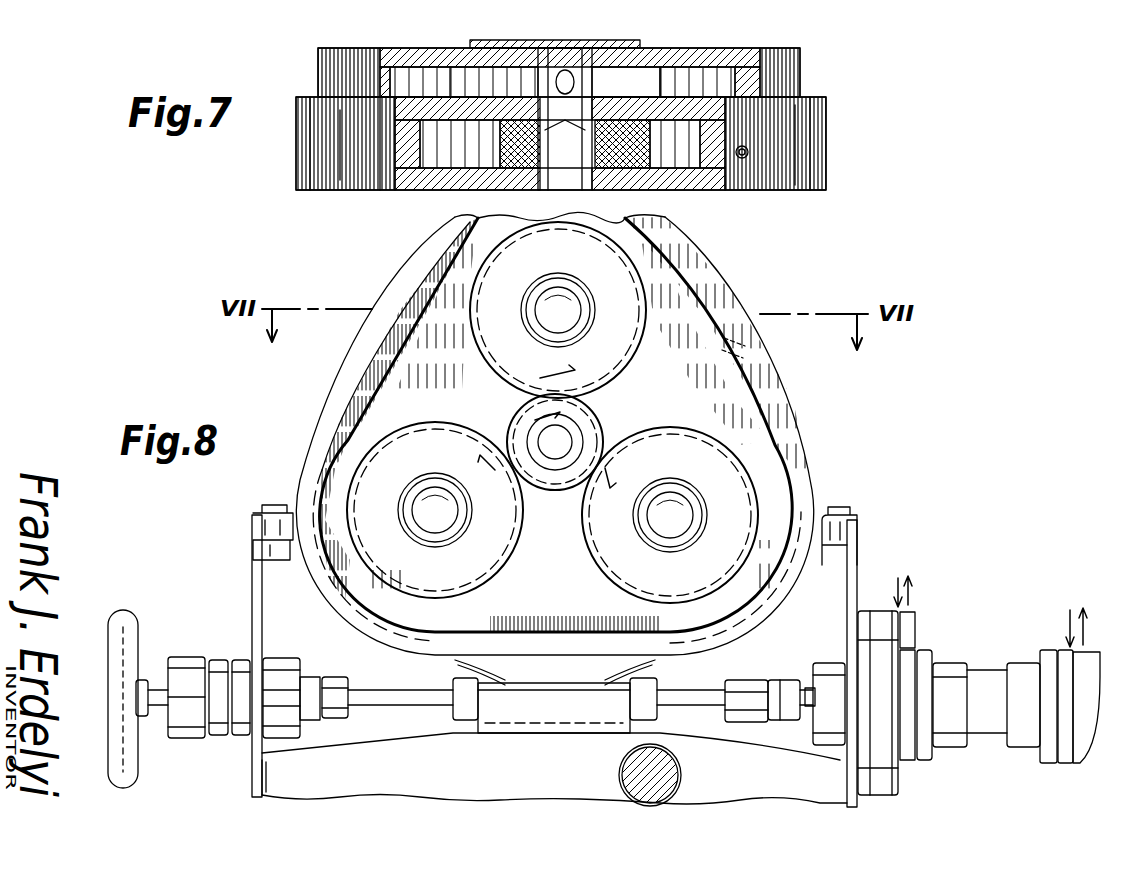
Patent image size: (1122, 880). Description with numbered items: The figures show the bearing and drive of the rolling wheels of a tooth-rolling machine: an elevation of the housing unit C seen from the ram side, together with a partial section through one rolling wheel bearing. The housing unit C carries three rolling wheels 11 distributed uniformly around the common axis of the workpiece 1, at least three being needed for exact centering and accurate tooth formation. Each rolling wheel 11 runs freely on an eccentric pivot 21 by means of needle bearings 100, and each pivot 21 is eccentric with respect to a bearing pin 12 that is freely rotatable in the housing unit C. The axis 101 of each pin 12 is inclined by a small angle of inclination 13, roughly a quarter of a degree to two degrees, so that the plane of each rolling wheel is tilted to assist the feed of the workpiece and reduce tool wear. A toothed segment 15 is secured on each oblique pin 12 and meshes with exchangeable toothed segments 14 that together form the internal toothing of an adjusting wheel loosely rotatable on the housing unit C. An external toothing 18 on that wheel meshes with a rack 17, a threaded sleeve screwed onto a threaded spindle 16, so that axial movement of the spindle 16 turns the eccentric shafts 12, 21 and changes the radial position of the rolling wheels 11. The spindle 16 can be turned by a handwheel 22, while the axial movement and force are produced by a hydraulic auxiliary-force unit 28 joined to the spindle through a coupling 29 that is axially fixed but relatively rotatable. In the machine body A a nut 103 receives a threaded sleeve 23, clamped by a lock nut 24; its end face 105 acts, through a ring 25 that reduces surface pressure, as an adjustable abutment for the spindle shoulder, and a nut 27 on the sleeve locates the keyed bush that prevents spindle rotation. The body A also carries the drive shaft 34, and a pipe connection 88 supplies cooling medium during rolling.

In FIG. 8, the workpiece 1 is at (597, 430).
In FIG. 7, the rolling wheel 11 is at (468, 183).
In FIG. 8, the rolling wheel 11 is at (457, 580).
In FIG. 7, the bearing pin 12 is at (587, 157).
In FIG. 8, the bearing pin 12 is at (440, 523).
In FIG. 7, the angle of inclination 13 is at (561, 140).
In FIG. 7, the toothed segment 14 is at (805, 83).
In FIG. 8, the toothed segment 14 is at (722, 285).
In FIG. 7, the toothed segment 15 is at (592, 93).
In FIG. 8, the threaded spindle 16 is at (702, 720).
In FIG. 8, the rack 17 is at (467, 723).
In FIG. 8, the external toothing 18 is at (455, 665).
In FIG. 7, the eccentric pivot 21 is at (592, 170).
In FIG. 8, the eccentric pivot 21 is at (583, 325).
In FIG. 8, the handwheel 22 is at (125, 612).
In FIG. 8, the threaded sleeve 23 is at (218, 660).
In FIG. 8, the lock nut 24 is at (238, 738).
In FIG. 8, the ring 25 is at (338, 716).
In FIG. 8, the nut 27 is at (182, 660).
In FIG. 8, the hydraulic auxiliary-force unit 28 is at (978, 685).
In FIG. 8, the coupling 29 is at (760, 672).
In FIG. 8, the shaft 34 is at (626, 775).
In FIG. 7, the pipe connection 88 is at (747, 160).
In FIG. 8, the pipe connection 88 is at (738, 346).
In FIG. 7, the needle bearing 100 is at (497, 180).
In FIG. 7, the axis 101 is at (543, 102).
In FIG. 8, the nut 103 is at (290, 652).
In FIG. 8, the end face 105 is at (333, 678).
In FIG. 8, the body A is at (850, 558).
In FIG. 7, the housing unit C is at (828, 155).
In FIG. 8, the housing unit C is at (792, 400).